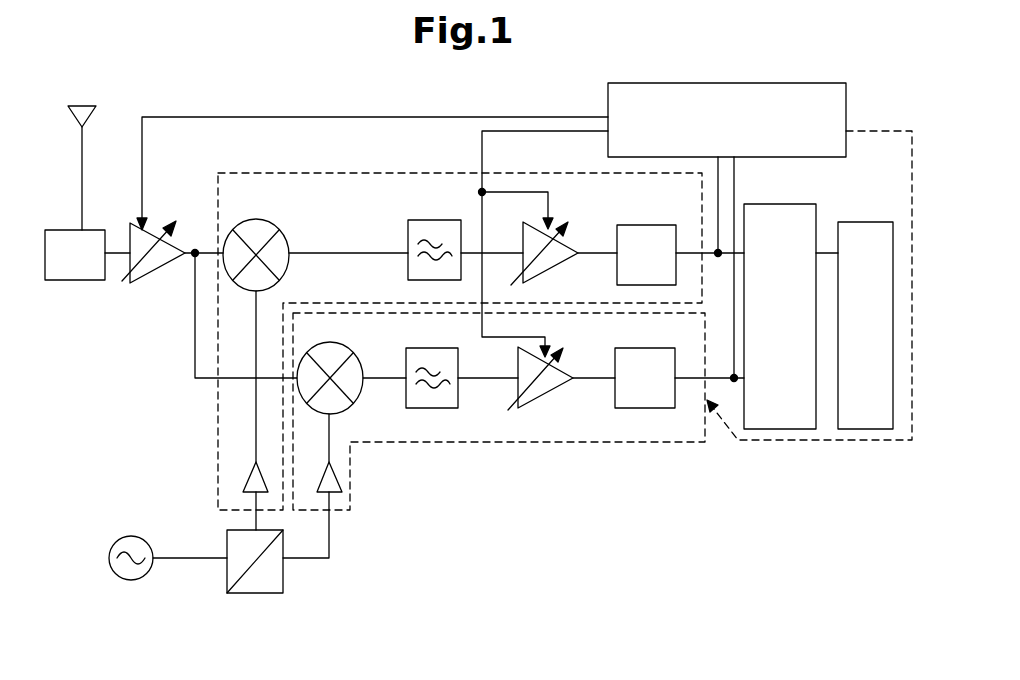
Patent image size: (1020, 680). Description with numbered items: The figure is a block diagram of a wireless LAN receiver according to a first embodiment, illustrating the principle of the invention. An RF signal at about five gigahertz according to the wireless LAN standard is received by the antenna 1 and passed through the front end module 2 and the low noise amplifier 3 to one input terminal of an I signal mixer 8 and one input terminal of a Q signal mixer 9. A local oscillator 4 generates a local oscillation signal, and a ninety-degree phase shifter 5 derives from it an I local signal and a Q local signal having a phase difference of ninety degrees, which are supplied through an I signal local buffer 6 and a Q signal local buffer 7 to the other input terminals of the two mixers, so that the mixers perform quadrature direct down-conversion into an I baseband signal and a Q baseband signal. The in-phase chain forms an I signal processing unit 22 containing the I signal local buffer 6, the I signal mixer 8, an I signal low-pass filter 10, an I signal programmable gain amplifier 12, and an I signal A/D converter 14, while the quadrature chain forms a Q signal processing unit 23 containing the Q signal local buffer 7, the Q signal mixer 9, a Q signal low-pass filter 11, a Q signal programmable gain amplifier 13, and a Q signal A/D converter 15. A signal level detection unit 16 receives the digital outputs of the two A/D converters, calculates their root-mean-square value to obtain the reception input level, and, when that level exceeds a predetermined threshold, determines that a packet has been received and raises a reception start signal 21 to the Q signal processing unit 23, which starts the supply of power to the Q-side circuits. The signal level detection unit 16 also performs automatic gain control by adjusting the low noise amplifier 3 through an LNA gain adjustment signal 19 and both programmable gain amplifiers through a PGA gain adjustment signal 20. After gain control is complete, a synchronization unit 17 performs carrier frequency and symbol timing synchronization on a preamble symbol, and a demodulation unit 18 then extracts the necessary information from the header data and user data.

The antenna 1 is at (96, 107).
The front end module 2 is at (88, 282).
The low noise amplifier 3 is at (174, 240).
The local oscillator 4 is at (148, 544).
The 90-degree phase shifter 5 is at (258, 594).
The I signal local buffer 6 is at (250, 478).
The Q signal local buffer 7 is at (323, 478).
The I signal mixer 8 is at (282, 235).
The Q signal mixer 9 is at (356, 358).
The I signal low-pass filter 10 is at (424, 220).
The Q signal low-pass filter 11 is at (422, 348).
The I signal programmable gain amplifier 12 is at (566, 240).
The Q signal programmable gain amplifier 13 is at (562, 365).
The I signal A/D converter 14 is at (640, 225).
The Q signal A/D converter 15 is at (636, 348).
The signal level detection unit 16 is at (738, 83).
The synchronization unit 17 is at (768, 204).
The demodulation unit 18 is at (858, 222).
The LNA gain adjustment signal 19 is at (372, 117).
The PGA gain adjustment signal 20 is at (508, 131).
The reception start signal 21 is at (825, 440).
The I signal processing unit 22 is at (366, 173).
The Q signal processing unit 23 is at (432, 442).